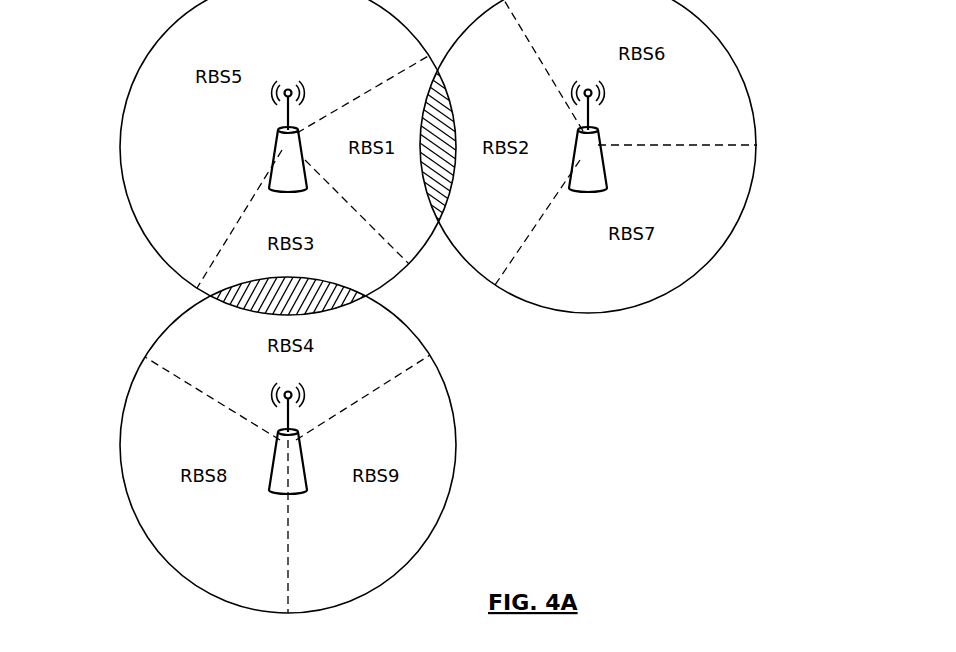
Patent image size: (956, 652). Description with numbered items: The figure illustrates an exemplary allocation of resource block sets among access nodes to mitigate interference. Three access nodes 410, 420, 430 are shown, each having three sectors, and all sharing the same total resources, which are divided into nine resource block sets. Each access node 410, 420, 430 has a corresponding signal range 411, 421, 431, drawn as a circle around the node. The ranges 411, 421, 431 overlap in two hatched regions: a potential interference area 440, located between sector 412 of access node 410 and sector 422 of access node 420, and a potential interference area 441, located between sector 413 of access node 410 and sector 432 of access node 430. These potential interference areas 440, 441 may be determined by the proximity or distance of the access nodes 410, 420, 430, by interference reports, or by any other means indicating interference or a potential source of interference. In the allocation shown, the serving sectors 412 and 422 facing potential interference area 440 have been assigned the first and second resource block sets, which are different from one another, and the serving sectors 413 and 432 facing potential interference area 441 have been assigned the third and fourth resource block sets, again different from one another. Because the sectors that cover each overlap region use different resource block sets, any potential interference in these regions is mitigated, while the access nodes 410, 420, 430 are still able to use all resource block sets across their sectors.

The access node 410 is at (278, 143).
The signal range 411 is at (123, 182).
The sector 412 is at (398, 72).
The sector 413 is at (238, 217).
The access node 420 is at (605, 172).
The signal range 421 is at (750, 192).
The sector 422 is at (532, 43).
The access node 430 is at (275, 493).
The signal range 431 is at (180, 578).
The sector 432 is at (357, 402).
The potential interference area 440 is at (455, 186).
The potential interference area 441 is at (256, 293).